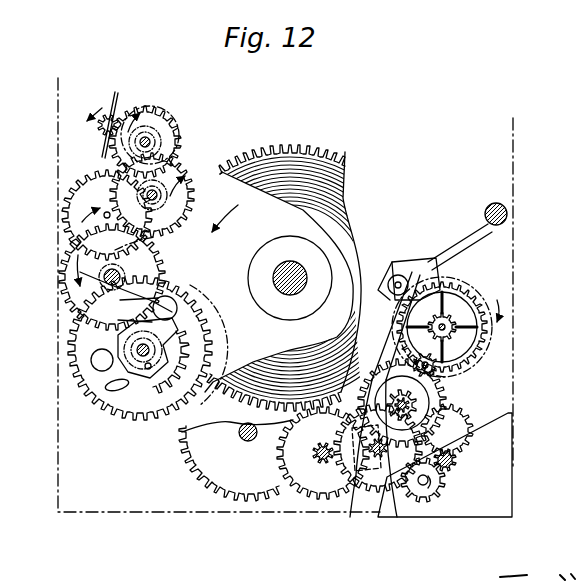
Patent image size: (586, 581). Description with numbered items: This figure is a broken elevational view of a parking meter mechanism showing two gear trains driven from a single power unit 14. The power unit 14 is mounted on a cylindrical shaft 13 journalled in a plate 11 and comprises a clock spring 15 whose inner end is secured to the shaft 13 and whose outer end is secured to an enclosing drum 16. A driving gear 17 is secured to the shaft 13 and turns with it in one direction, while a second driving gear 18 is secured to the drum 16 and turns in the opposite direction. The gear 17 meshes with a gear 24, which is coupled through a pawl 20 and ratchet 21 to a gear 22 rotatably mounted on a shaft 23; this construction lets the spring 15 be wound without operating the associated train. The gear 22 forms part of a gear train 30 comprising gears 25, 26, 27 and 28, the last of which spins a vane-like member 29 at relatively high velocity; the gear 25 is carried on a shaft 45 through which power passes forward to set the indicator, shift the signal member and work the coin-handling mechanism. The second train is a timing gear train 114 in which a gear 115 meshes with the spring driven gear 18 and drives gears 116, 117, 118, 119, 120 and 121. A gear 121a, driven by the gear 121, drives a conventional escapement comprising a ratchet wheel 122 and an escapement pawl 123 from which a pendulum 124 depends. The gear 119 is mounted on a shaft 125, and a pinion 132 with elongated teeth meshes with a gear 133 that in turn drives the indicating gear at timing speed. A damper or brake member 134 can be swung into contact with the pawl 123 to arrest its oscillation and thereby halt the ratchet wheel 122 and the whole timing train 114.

The plate 11 is at (500, 481).
The cylindrical shaft 13 is at (302, 270).
The power unit 14 is at (347, 142).
The clock spring 15 is at (302, 168).
The enclosing drum 16 is at (280, 160).
The driving gear 17 is at (207, 163).
The second driving gear 18 is at (255, 150).
The pawl 20 is at (104, 383).
The ratchet 21 is at (128, 349).
The gear 22 is at (123, 412).
The shaft 23 is at (148, 372).
The gear 24 is at (205, 330).
The gear 25 is at (63, 270).
The gear 26 is at (78, 197).
The gear 27 is at (165, 230).
The gear 28 is at (116, 144).
The vane-like member 29 is at (111, 97).
The gear train 30 is at (139, 106).
The shaft 45 is at (115, 278).
The timing gear train 114 is at (506, 391).
The gear 115 is at (210, 433).
The gear 116 is at (288, 490).
The gear 117 is at (322, 463).
The gear 118 is at (343, 498).
The gear 119 is at (374, 496).
The gear 120 is at (353, 494).
The gear 121 is at (400, 398).
The gear 121a is at (450, 376).
The ratchet wheel 122 is at (485, 308).
The escapement pawl 123 is at (412, 266).
The pendulum 124 is at (390, 368).
The shaft 125 is at (394, 515).
The pinion 132 is at (459, 463).
The gear 133 is at (440, 489).
The brake member 134 is at (482, 247).